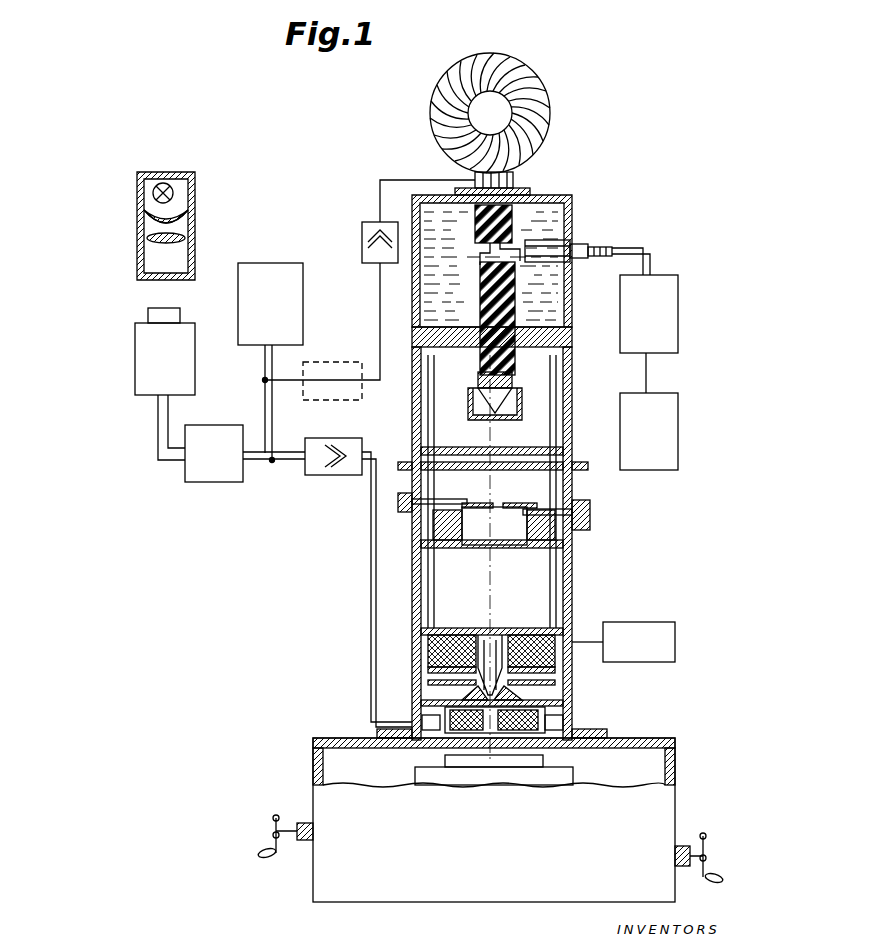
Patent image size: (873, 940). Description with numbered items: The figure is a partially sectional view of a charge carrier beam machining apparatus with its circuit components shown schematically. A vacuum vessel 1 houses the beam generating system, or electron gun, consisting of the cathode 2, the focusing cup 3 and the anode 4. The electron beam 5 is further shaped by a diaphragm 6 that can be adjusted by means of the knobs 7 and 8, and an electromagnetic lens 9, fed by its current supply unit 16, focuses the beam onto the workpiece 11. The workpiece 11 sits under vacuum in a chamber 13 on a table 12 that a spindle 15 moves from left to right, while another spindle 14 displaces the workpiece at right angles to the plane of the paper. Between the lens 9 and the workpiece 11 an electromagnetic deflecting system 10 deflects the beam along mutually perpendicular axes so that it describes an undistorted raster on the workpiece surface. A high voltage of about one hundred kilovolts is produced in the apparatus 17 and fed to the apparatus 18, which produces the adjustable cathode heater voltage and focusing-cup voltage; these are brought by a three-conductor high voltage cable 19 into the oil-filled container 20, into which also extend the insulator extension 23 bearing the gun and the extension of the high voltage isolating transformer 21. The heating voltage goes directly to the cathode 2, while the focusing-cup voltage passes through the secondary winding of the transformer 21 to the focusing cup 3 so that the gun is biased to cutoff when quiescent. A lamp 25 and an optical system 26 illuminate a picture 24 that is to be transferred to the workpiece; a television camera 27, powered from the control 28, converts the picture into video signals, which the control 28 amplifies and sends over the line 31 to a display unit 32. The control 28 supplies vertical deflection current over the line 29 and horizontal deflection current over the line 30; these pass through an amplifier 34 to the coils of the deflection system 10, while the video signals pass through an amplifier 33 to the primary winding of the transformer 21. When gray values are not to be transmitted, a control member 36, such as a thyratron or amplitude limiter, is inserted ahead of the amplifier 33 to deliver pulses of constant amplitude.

The vacuum vessel 1 is at (573, 484).
The cathode 2 is at (530, 386).
The focusing cup 3 is at (523, 405).
The anode 4 is at (545, 448).
The electron beam 5 is at (502, 506).
The diaphragm 6 is at (478, 504).
The knob 7 is at (591, 520).
The knob 8 is at (400, 512).
The electromagnetic lens 9 is at (525, 630).
The electromagnetic deflecting system 10 is at (573, 718).
The workpiece 11 is at (540, 760).
The table 12 is at (558, 775).
The chamber 13 is at (676, 760).
The spindle 14 is at (706, 858).
The spindle 15 is at (275, 826).
The current supply unit 16 is at (628, 628).
The high voltage apparatus 17 is at (672, 423).
The heater and focusing-cup voltage apparatus 18 is at (670, 305).
The three-conductor high voltage cable 19 is at (594, 240).
The oil-filled container 20 is at (575, 207).
The high voltage isolating transformer 21 is at (541, 107).
The insulator extension 23 is at (540, 296).
The picture 24 is at (176, 282).
The lamp 25 is at (164, 183).
The optical system 26 is at (186, 238).
The television camera 27 is at (186, 364).
The control 28 is at (220, 436).
The line 29 is at (258, 462).
The line 30 is at (292, 450).
The line 31 is at (263, 369).
The display unit 32 is at (292, 296).
The amplifier 33 is at (362, 240).
The amplifier 34 is at (340, 475).
The control member 36 is at (358, 362).